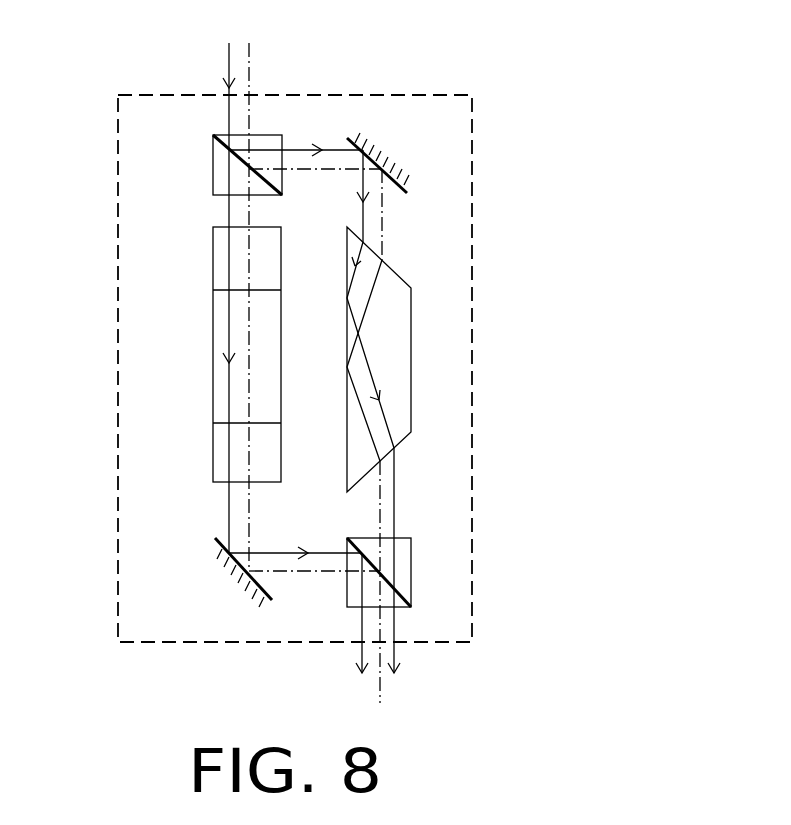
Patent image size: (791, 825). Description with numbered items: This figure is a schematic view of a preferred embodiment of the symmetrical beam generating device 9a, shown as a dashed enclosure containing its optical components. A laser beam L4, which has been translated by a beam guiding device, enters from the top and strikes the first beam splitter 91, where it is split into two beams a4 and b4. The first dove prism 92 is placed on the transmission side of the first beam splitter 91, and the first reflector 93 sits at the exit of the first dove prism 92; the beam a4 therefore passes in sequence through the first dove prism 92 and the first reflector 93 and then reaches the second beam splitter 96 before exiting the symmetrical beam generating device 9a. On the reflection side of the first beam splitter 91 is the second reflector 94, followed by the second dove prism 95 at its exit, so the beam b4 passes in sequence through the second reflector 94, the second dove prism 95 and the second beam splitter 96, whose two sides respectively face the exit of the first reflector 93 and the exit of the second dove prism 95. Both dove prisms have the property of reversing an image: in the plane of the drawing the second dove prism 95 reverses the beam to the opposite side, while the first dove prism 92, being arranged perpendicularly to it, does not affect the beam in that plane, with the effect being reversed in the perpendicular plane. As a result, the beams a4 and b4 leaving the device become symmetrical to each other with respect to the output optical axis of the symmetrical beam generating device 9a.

The symmetrical beam generating device 9a is at (116, 128).
The laser beam L4 is at (237, 289).
The first beam splitter 91 is at (228, 148).
The first dove prism 92 is at (213, 258).
The first reflector 93 is at (215, 538).
The second reflector 94 is at (400, 184).
The second dove prism 95 is at (410, 345).
The second beam splitter 96 is at (408, 591).
The beam a4 is at (353, 693).
The beam b4 is at (405, 693).